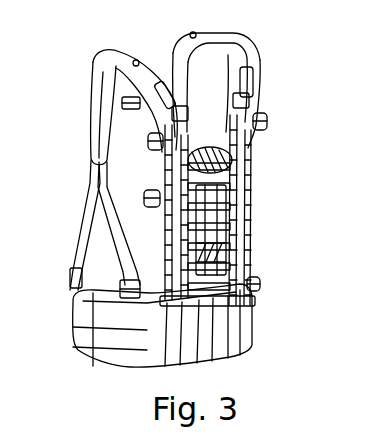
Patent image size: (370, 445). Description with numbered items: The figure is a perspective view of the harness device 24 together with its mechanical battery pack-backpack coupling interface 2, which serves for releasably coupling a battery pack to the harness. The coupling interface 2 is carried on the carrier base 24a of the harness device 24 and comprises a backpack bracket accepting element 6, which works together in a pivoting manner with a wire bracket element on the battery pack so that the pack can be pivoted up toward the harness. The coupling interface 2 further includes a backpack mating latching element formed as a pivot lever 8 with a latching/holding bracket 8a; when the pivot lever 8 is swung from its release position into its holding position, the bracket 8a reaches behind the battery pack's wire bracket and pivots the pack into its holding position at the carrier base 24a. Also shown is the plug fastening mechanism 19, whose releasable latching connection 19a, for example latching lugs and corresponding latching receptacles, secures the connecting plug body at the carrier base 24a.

The mechanical battery pack-backpack coupling interface 2 is at (206, 166).
The backpack bracket accepting element 6 is at (200, 303).
The pivot lever 8 is at (104, 174).
The latching/holding bracket 8a is at (186, 158).
The plug fastening mechanism 19 is at (262, 95).
The releasable latching connection 19a is at (186, 158).
The harness device 24 is at (260, 230).
The carrier base 24a is at (249, 230).